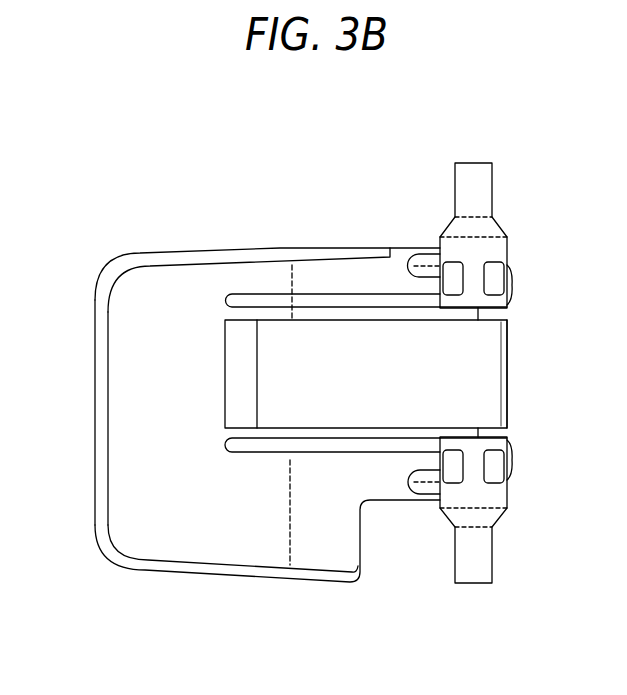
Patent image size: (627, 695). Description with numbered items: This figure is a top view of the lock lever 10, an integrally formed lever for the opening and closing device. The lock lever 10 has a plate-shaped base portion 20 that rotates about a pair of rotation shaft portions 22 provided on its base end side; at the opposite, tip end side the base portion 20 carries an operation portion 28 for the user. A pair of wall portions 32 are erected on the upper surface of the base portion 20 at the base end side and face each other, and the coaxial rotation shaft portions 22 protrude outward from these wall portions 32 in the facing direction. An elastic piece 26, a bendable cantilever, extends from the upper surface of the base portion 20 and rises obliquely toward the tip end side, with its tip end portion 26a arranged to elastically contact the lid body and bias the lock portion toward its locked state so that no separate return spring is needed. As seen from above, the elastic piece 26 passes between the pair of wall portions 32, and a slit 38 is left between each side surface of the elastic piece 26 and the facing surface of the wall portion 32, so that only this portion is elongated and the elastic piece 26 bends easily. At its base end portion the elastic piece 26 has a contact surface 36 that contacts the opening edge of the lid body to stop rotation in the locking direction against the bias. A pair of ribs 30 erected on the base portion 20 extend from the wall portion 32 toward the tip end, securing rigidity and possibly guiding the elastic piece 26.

The lock lever 10 is at (148, 613).
The base portion 20 is at (302, 532).
The rotation shaft portions 22 is at (470, 180).
The elastic piece 26 is at (323, 345).
The tip end portion 26a is at (234, 372).
The operation portion 28 is at (98, 416).
The ribs 30 is at (358, 296).
The wall portions 32 is at (423, 263).
The contact surface 36 is at (509, 370).
The slit 38 is at (509, 313).